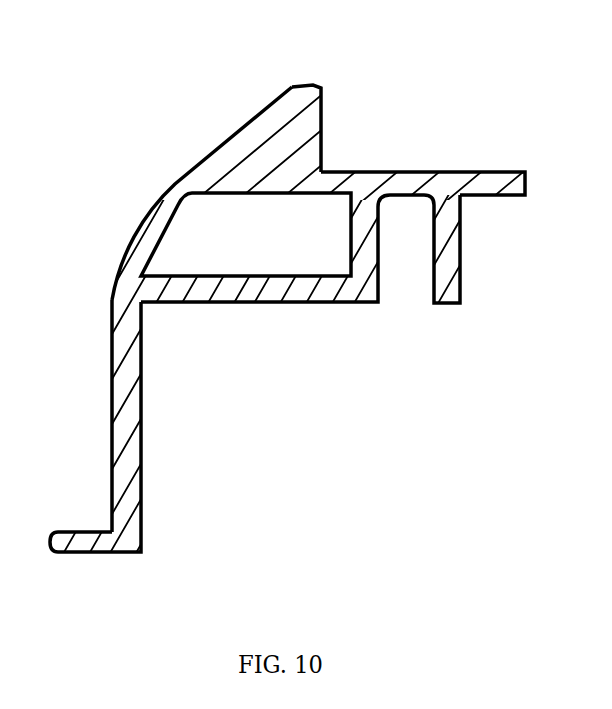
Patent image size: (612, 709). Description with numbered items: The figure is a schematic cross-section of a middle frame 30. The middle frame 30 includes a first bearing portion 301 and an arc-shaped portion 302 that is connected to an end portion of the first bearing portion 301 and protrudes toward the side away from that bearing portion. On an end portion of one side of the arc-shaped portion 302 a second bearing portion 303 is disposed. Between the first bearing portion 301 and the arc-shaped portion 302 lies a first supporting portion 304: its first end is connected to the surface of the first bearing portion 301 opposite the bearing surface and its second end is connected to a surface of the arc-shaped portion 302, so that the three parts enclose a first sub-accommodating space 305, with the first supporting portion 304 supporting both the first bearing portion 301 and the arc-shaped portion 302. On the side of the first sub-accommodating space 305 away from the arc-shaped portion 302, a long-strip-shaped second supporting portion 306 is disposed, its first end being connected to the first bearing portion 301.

The middle frame 30 is at (305, 613).
The first bearing portion 301 is at (424, 196).
The arc-shaped portion 302 is at (140, 223).
The second bearing portion 303 is at (313, 95).
The first supporting portion 304 is at (280, 282).
The first sub-accommodating space 305 is at (202, 220).
The second supporting portion 306 is at (442, 258).